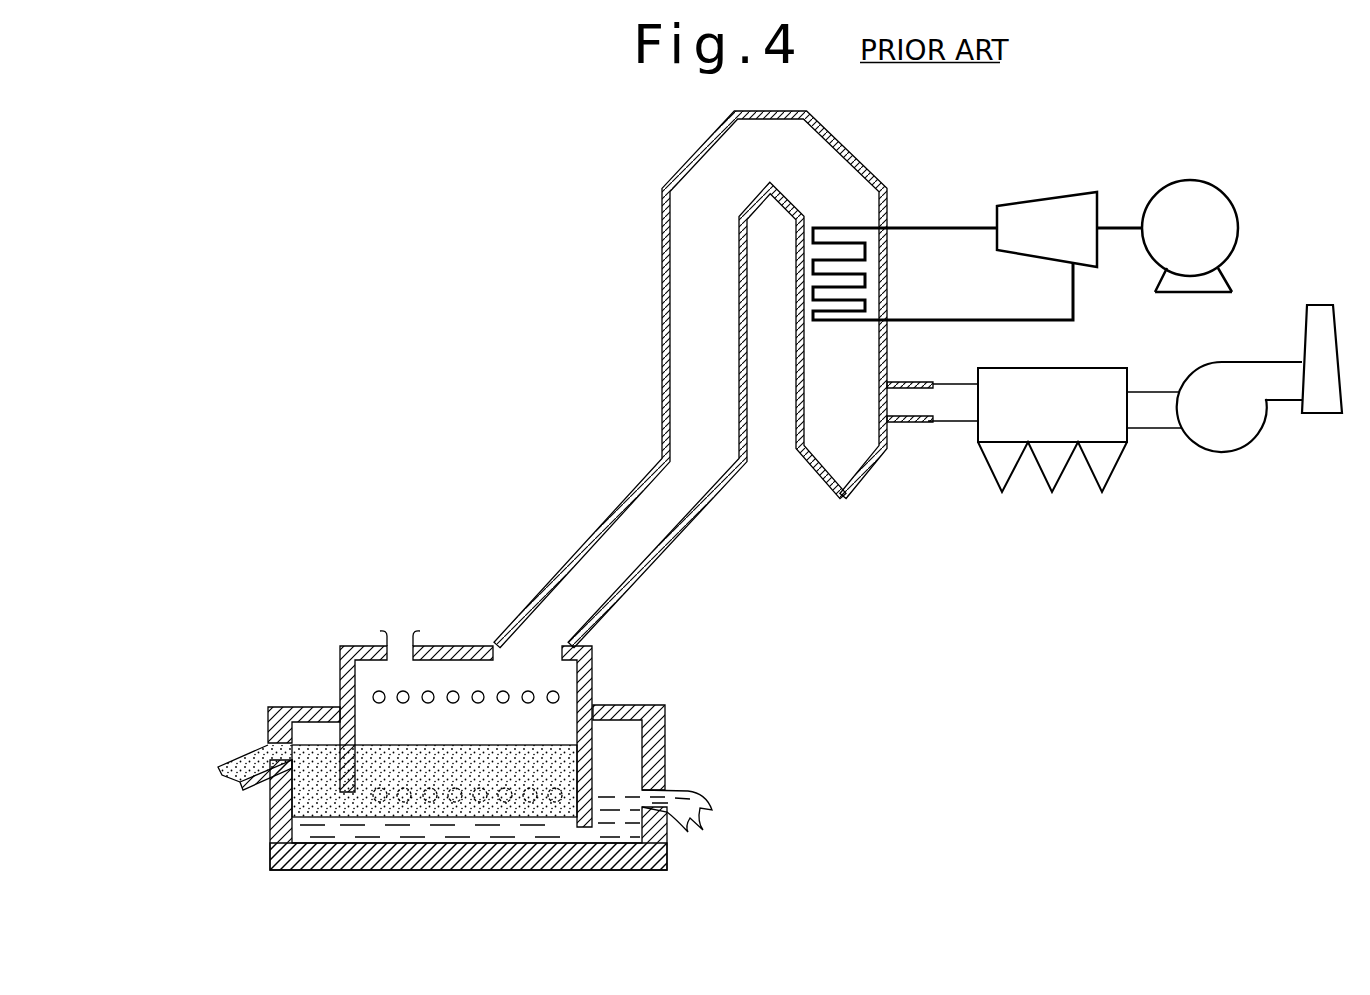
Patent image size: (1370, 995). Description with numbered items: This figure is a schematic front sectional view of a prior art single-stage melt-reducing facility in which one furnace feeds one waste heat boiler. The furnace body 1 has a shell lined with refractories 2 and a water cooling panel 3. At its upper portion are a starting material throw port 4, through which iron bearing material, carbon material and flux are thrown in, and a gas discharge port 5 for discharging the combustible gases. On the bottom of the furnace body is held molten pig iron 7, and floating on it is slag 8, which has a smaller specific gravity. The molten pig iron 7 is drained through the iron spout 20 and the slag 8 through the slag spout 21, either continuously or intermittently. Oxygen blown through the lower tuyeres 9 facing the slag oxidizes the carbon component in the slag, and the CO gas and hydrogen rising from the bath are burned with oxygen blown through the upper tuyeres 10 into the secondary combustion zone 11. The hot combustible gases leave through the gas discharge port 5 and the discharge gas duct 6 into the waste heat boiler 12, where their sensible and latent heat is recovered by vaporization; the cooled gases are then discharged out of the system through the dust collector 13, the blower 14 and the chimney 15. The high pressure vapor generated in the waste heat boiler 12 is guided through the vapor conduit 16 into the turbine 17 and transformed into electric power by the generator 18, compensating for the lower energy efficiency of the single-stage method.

The furnace body 1 is at (574, 877).
The refractories 2 is at (332, 862).
The water cooling panel 3 is at (592, 672).
The starting material throw port 4 is at (400, 637).
The gas discharge port 5 is at (520, 645).
The discharge gas duct 6 is at (680, 528).
The molten pig iron 7 is at (407, 835).
The slag 8 is at (385, 752).
The lower tuyere 9 is at (485, 800).
The upper tuyere 10 is at (453, 703).
The secondary combustion zone 11 is at (595, 702).
The waste heat boiler 12 is at (857, 203).
The dust collector 13 is at (1034, 430).
The blower 14 is at (1240, 432).
The chimney 15 is at (1320, 352).
The vapor conduit 16 is at (947, 227).
The turbine 17 is at (1048, 218).
The generator 18 is at (1210, 208).
The iron spout 20 is at (677, 788).
The slag spout 21 is at (262, 743).